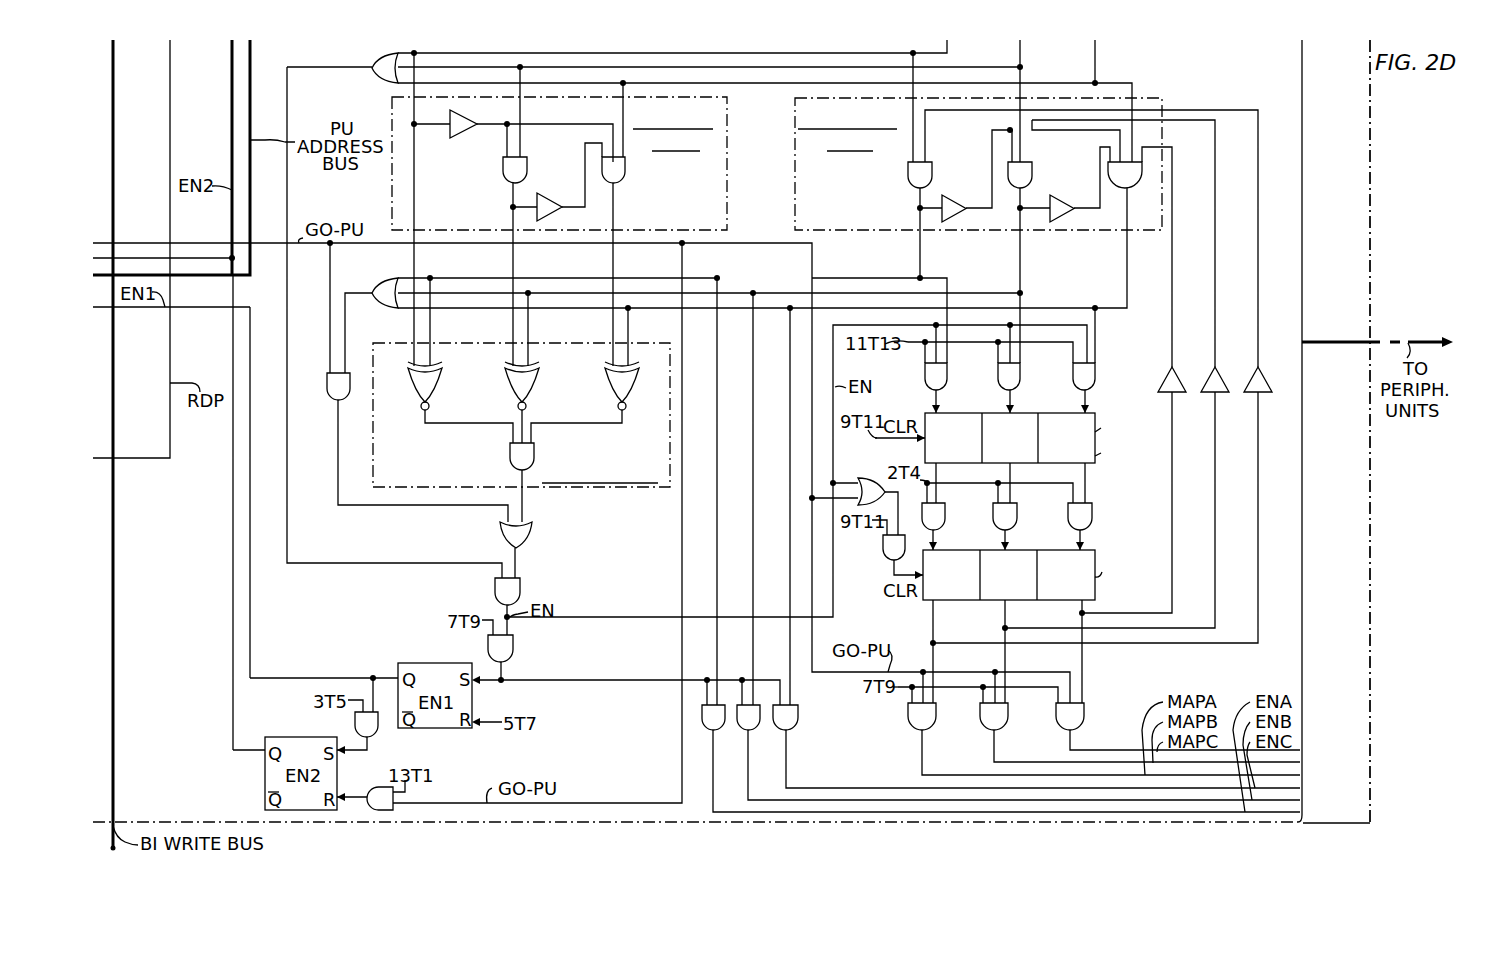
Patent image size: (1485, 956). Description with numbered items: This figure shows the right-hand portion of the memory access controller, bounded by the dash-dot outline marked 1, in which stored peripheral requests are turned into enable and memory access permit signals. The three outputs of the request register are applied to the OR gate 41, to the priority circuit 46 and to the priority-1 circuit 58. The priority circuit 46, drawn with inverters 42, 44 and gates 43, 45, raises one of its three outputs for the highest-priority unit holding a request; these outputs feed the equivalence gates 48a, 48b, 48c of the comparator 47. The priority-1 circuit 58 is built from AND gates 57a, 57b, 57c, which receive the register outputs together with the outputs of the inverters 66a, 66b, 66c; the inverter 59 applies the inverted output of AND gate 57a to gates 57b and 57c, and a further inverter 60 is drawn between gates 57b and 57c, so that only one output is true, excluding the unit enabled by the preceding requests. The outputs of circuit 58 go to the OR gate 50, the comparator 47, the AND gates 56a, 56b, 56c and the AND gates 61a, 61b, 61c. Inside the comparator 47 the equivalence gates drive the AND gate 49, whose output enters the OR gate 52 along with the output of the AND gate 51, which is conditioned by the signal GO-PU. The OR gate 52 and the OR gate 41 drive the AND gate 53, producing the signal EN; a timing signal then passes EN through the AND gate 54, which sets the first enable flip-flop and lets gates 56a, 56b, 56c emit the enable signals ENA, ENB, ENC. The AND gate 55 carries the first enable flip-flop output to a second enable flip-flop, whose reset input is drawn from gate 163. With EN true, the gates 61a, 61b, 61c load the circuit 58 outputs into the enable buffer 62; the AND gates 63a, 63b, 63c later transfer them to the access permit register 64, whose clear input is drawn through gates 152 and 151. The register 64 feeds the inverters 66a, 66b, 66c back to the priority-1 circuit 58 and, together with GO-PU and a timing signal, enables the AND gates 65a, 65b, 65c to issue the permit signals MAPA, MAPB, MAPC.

The data processing system 1 is at (1370, 183).
The OR gate 41 is at (374, 76).
The inverter 42 is at (452, 130).
The AND gate 43 is at (503, 170).
The inverter 44 is at (545, 192).
The AND gate 45 is at (626, 174).
The priority circuit 46 is at (727, 135).
The comparator 47 is at (612, 488).
The equivalence gate 48a is at (443, 378).
The equivalence gate 48b is at (540, 378).
The equivalence gate 48c is at (642, 386).
The AND gate 49 is at (510, 458).
The OR gate 50 is at (383, 278).
The AND gate 51 is at (327, 386).
The OR gate 52 is at (532, 530).
The AND gate 53 is at (520, 586).
The AND gate 54 is at (513, 650).
The AND gate 55 is at (355, 730).
The AND gate 56a is at (725, 728).
The AND gate 56b is at (760, 728).
The AND gate 56c is at (798, 728).
The AND gate 57a is at (908, 180).
The AND gate 57b is at (1032, 180).
The AND gate 57c is at (1138, 190).
The priority-1 circuit 58 is at (795, 160).
The inverter 59 is at (962, 216).
The inverter 60 is at (1070, 216).
The AND gate 61a is at (947, 376).
The AND gate 61b is at (1020, 376).
The AND gate 61c is at (1095, 376).
The enable buffer 62 is at (1097, 413).
The AND gate 63a is at (945, 507).
The AND gate 63b is at (1017, 507).
The AND gate 63c is at (1092, 507).
The access permit register 64 is at (1097, 553).
The AND gate 65a is at (936, 722).
The AND gate 65b is at (1008, 722).
The AND gate 65c is at (1084, 722).
The inverter 66a is at (1269, 395).
The inverter 66b is at (1225, 395).
The inverter 66c is at (1184, 395).
The AND gate 151 is at (883, 552).
The OR gate 152 is at (868, 479).
The AND gate 163 is at (374, 788).